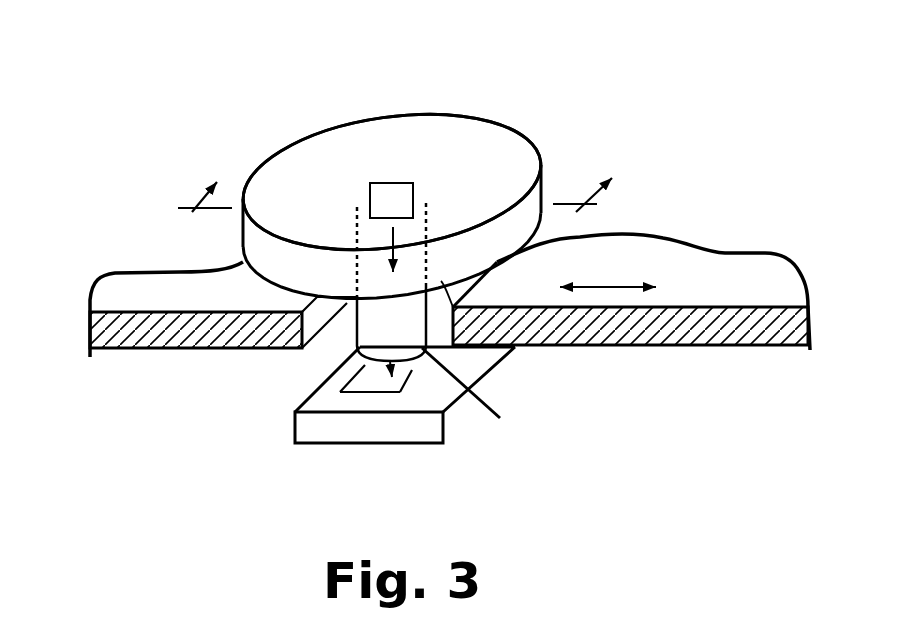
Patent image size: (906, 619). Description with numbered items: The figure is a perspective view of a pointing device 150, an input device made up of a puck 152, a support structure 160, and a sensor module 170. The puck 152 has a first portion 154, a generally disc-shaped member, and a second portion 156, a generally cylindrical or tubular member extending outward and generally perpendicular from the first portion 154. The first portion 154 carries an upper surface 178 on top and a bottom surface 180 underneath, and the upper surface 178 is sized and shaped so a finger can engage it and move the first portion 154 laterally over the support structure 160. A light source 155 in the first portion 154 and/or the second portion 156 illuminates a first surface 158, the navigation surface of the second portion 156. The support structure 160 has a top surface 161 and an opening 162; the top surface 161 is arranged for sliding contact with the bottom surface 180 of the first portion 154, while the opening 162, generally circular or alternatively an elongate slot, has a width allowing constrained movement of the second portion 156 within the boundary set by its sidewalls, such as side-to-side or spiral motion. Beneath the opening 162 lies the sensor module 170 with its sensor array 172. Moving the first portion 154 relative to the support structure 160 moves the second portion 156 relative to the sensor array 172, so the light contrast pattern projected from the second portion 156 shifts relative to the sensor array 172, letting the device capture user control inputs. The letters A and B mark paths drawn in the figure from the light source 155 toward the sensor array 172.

The pointing device 150 is at (246, 62).
The puck 152 is at (363, 110).
The first portion 154 is at (308, 152).
The light source 155 is at (423, 187).
The second portion 156 is at (373, 332).
The first surface 158 is at (403, 356).
The support structure 160 is at (684, 294).
The top surface 161 is at (765, 293).
The opening 162 is at (307, 300).
The sensor module 170 is at (424, 459).
The sensor array 172 is at (373, 383).
The upper surface 178 is at (373, 169).
The bottom surface 180 is at (453, 307).
The light path A is at (452, 270).
The light path B is at (397, 360).